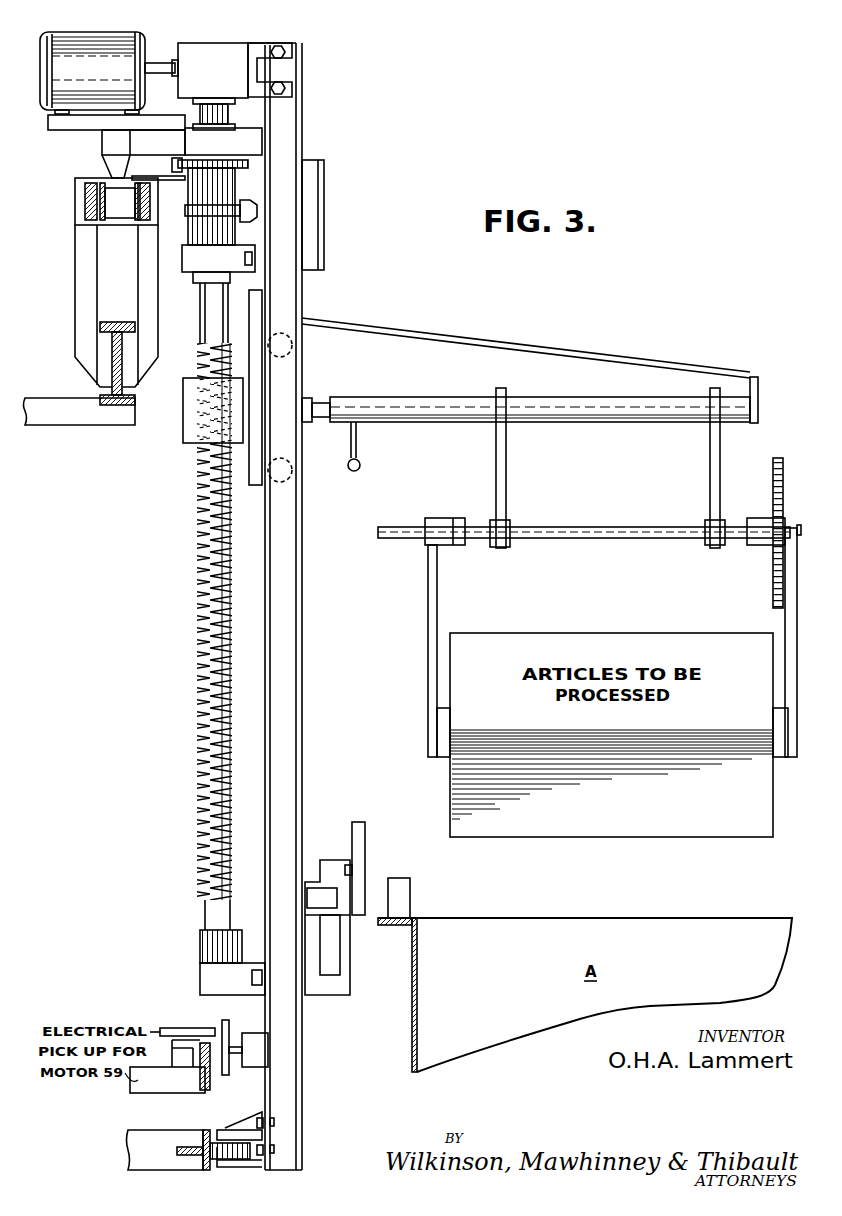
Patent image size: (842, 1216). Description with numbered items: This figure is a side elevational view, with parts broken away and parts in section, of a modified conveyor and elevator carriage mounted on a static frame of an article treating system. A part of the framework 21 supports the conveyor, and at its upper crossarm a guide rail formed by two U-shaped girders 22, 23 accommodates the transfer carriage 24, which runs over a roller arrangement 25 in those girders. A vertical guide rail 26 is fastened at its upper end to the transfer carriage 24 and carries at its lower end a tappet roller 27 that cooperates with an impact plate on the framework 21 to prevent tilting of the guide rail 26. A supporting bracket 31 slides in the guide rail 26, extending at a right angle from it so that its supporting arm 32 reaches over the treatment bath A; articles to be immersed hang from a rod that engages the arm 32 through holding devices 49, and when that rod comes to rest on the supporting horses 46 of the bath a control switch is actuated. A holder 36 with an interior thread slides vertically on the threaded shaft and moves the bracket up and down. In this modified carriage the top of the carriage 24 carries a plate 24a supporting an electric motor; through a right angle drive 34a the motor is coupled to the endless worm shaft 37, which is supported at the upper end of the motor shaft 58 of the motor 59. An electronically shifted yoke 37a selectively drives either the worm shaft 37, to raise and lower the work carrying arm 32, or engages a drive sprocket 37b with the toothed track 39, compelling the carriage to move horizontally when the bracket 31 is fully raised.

The framework 21 is at (90, 418).
The U-shaped girder 22 is at (85, 196).
The U-shaped girder 23 is at (136, 222).
The transfer carriage 24 is at (243, 146).
The plate 24a is at (75, 125).
The roller arrangement 25 is at (112, 212).
The guide rail 26 is at (287, 584).
The tappet roller 27 is at (232, 1152).
The supporting bracket 31 is at (530, 345).
The supporting arm 32 is at (396, 408).
The right angle drive 34a is at (222, 57).
The holder 36 is at (185, 432).
The worm shaft 37 is at (203, 523).
The electronically shifted yoke 37a is at (235, 221).
The drive sprocket 37b is at (249, 165).
The toothed track 39 is at (176, 174).
The supporting horse 46 is at (405, 905).
The holding device 49 is at (506, 472).
The motor shaft 58 is at (228, 116).
The motor 59 is at (126, 46).